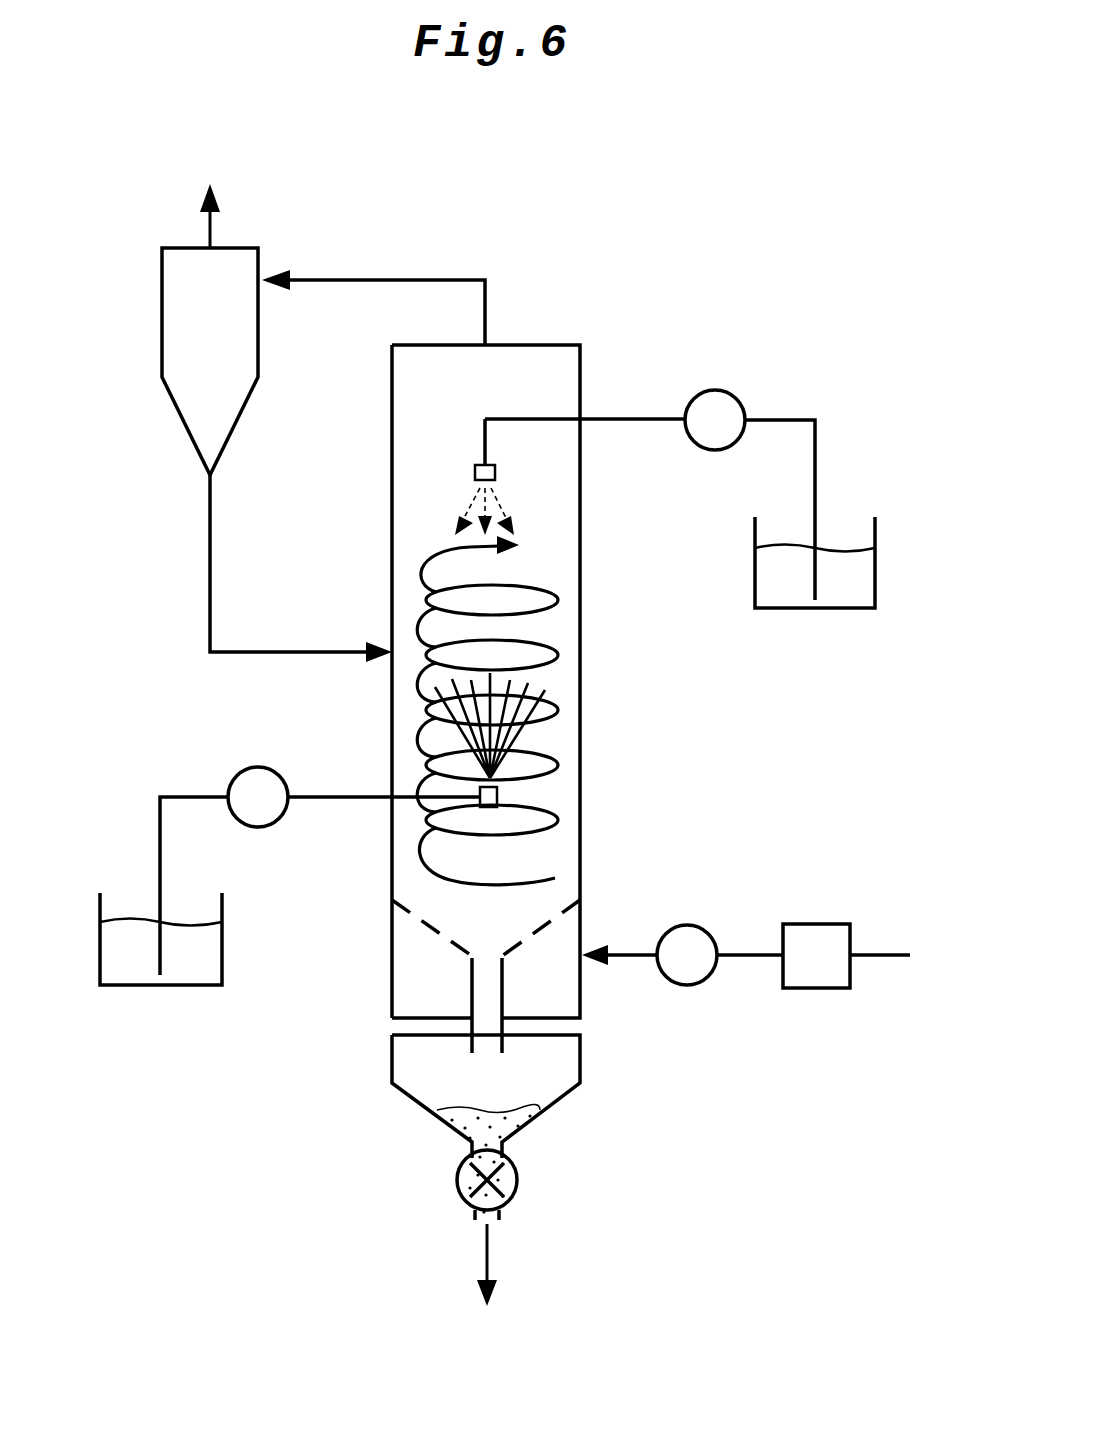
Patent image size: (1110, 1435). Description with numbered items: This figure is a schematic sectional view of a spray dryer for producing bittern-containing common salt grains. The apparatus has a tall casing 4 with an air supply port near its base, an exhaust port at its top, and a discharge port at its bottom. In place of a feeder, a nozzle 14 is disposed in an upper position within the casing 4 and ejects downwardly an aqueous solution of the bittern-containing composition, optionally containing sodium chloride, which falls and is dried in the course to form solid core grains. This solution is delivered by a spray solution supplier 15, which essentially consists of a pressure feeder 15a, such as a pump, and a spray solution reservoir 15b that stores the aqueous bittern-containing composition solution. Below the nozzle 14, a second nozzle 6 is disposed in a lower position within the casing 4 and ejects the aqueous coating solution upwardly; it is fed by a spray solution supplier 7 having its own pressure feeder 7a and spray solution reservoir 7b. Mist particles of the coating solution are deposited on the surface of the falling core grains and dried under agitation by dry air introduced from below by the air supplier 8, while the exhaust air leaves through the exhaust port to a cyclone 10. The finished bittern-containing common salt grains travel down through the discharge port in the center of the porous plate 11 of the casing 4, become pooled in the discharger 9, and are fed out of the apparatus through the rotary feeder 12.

The casing 4 is at (580, 683).
The nozzle 6 is at (497, 788).
The spray solution supplier 7 is at (284, 900).
The pressure feeder 7a is at (232, 783).
The spray solution reservoir 7b is at (135, 965).
The air supplier 8 is at (875, 872).
The discharger 9 is at (628, 1068).
The cyclone 10 is at (162, 312).
The porous plate 11 is at (562, 912).
The rotary feeder 12 is at (517, 1170).
The nozzle 14 is at (487, 463).
The spray solution supplier 15 is at (687, 509).
The pressure feeder 15a is at (742, 392).
The spray solution reservoir 15b is at (856, 595).